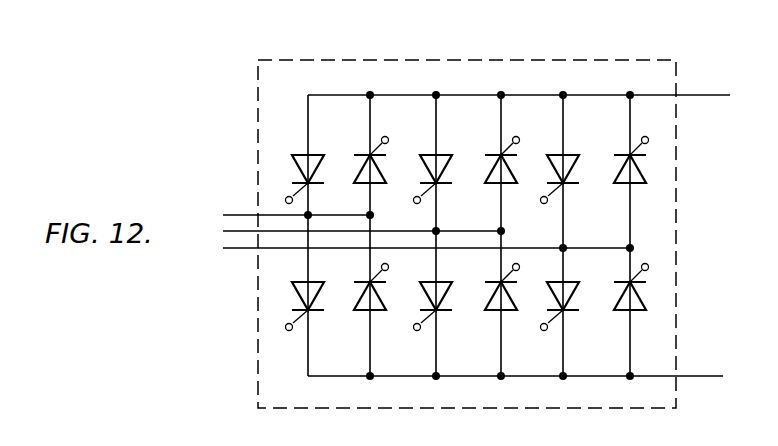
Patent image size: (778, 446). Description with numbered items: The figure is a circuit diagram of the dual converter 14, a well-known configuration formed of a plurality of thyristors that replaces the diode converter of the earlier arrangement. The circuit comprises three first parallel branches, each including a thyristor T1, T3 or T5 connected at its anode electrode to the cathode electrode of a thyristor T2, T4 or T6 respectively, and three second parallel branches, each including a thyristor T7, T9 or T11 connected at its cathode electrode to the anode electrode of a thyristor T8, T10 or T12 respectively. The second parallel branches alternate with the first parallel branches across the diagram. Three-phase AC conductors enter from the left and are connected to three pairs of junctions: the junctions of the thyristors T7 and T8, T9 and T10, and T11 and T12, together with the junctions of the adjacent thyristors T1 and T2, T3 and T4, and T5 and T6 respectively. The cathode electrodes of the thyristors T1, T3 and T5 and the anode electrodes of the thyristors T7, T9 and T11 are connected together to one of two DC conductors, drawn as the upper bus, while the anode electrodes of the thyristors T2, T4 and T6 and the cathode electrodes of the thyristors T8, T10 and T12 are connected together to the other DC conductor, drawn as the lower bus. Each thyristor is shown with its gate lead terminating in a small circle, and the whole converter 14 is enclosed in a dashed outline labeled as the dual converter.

The dual converter 14 is at (313, 57).
The thyristor T1 is at (392, 160).
The thyristor T2 is at (358, 304).
The thyristor T3 is at (514, 150).
The thyristor T4 is at (494, 303).
The thyristor T5 is at (634, 170).
The thyristor T6 is at (623, 302).
The thyristor T7 is at (312, 165).
The thyristor T8 is at (303, 298).
The thyristor T9 is at (441, 165).
The thyristor T10 is at (430, 298).
The thyristor T11 is at (567, 165).
The thyristor T12 is at (558, 298).